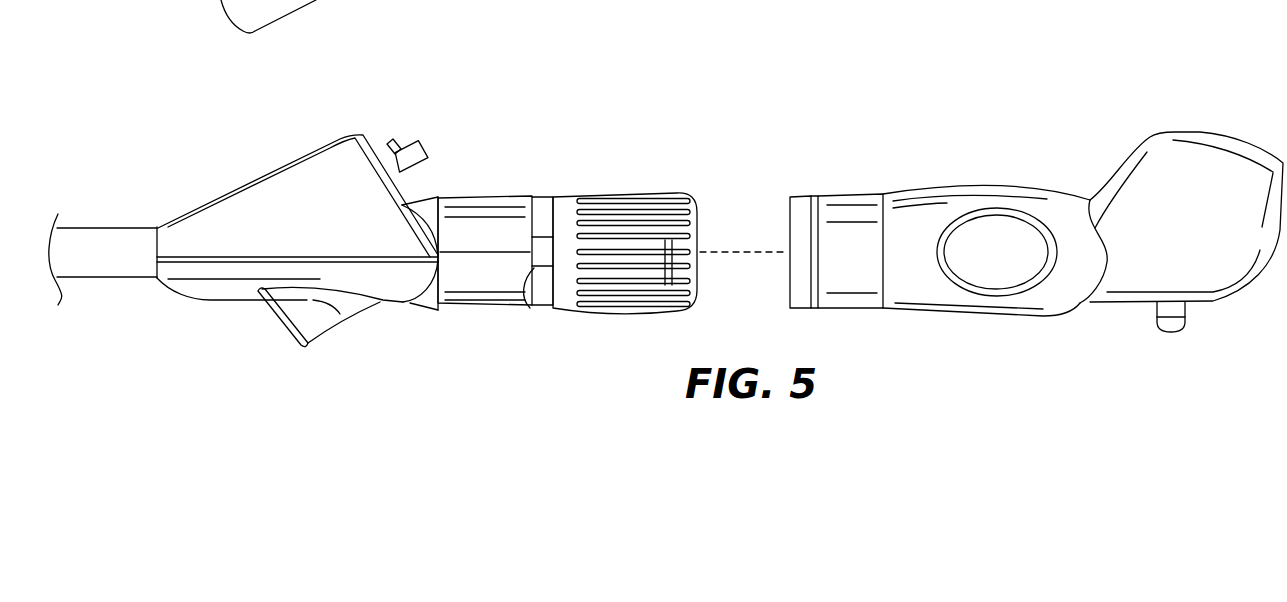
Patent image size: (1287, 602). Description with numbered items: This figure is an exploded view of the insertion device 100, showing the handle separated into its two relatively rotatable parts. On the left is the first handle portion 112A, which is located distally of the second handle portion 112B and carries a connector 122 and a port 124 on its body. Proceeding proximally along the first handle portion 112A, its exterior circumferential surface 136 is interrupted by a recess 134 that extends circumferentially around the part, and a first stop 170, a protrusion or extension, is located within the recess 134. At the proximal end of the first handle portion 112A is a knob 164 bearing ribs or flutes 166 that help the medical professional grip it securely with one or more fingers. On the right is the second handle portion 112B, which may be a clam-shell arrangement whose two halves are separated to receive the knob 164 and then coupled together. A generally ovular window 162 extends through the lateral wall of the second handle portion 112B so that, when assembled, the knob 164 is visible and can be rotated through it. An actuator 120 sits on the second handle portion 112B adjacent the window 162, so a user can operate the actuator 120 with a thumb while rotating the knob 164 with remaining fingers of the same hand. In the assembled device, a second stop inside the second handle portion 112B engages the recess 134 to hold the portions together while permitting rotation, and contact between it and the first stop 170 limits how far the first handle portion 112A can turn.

The insertion device 100 is at (1074, 112).
The connector 122 is at (507, 0).
The first handle portion 112A is at (242, 182).
The port 124 is at (386, 140).
The exterior circumferential surface 136 is at (488, 198).
The recess 134 is at (550, 198).
The first stop 170 is at (530, 308).
The knob 164 is at (625, 270).
The ribs or flutes 166 is at (640, 262).
The second handle portion 112B is at (948, 315).
The window 162 is at (1003, 268).
The actuator 120 is at (1183, 325).